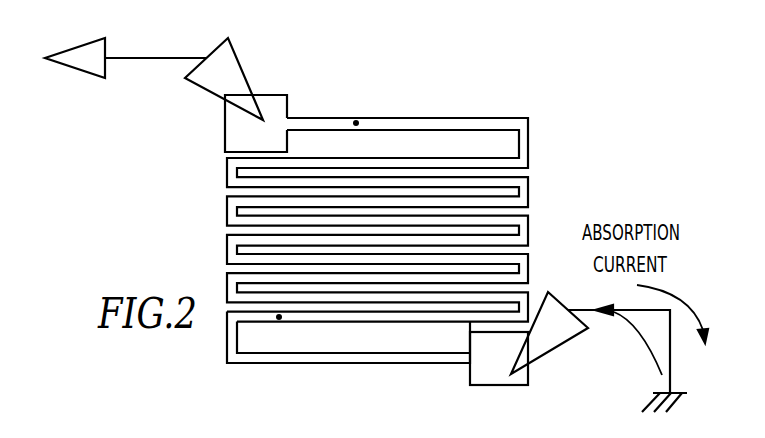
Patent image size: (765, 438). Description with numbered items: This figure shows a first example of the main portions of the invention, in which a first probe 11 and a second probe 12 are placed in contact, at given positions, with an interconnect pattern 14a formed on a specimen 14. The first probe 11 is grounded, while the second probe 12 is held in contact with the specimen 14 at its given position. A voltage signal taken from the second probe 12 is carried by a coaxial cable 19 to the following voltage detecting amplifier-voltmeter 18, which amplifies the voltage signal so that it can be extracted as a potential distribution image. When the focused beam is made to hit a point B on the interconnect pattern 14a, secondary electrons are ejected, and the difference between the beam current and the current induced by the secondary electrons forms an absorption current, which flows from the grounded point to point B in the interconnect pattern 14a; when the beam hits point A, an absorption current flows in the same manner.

The first probe 11 is at (567, 347).
The second probe 12 is at (238, 60).
The specimen 14 is at (498, 97).
The interconnect pattern 14a is at (335, 364).
The voltage detecting amplifier-voltmeter 18 is at (73, 67).
The coaxial cable 19 is at (145, 56).